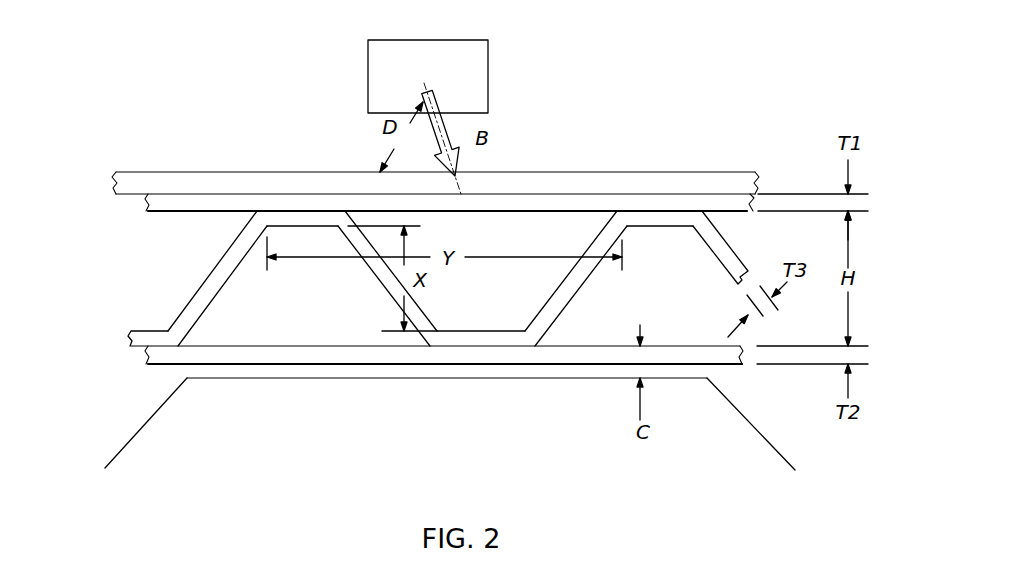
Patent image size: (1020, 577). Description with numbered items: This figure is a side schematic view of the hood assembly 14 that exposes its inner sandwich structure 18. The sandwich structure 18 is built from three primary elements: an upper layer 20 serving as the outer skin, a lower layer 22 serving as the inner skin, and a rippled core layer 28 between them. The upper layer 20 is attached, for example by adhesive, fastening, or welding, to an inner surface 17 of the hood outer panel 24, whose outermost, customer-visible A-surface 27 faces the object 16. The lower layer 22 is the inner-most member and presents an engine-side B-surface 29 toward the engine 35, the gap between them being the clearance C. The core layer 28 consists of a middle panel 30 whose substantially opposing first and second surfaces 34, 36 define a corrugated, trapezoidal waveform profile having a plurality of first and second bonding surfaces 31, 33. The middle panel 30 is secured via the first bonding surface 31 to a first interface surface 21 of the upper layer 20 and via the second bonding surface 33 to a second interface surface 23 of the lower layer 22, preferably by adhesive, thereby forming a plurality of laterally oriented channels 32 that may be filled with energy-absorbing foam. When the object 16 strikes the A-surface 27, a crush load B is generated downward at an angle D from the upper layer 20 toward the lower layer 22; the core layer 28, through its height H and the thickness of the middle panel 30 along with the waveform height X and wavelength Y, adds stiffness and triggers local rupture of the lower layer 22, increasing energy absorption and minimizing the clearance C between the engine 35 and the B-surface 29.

The hood assembly 14 is at (730, 122).
The object 16 is at (367, 77).
The inner surface of hood outer panel 17 is at (282, 195).
The sandwich structure 18 is at (100, 195).
The upper layer 20 is at (170, 200).
The first interface surface 21 is at (510, 215).
The lower layer 22 is at (167, 358).
The second interface surface 23 is at (352, 346).
The hood outer panel 24 is at (223, 183).
The A-surface 27 is at (303, 172).
The core layer 28 is at (572, 237).
The B-surface 29 is at (327, 364).
The middle panel 30 is at (650, 217).
The first bonding surface 31 is at (312, 210).
The channels 32 is at (203, 245).
The second bonding surface 33 is at (450, 347).
The first surface 34 is at (482, 331).
The engine 35 is at (720, 420).
The second surface 36 is at (482, 346).